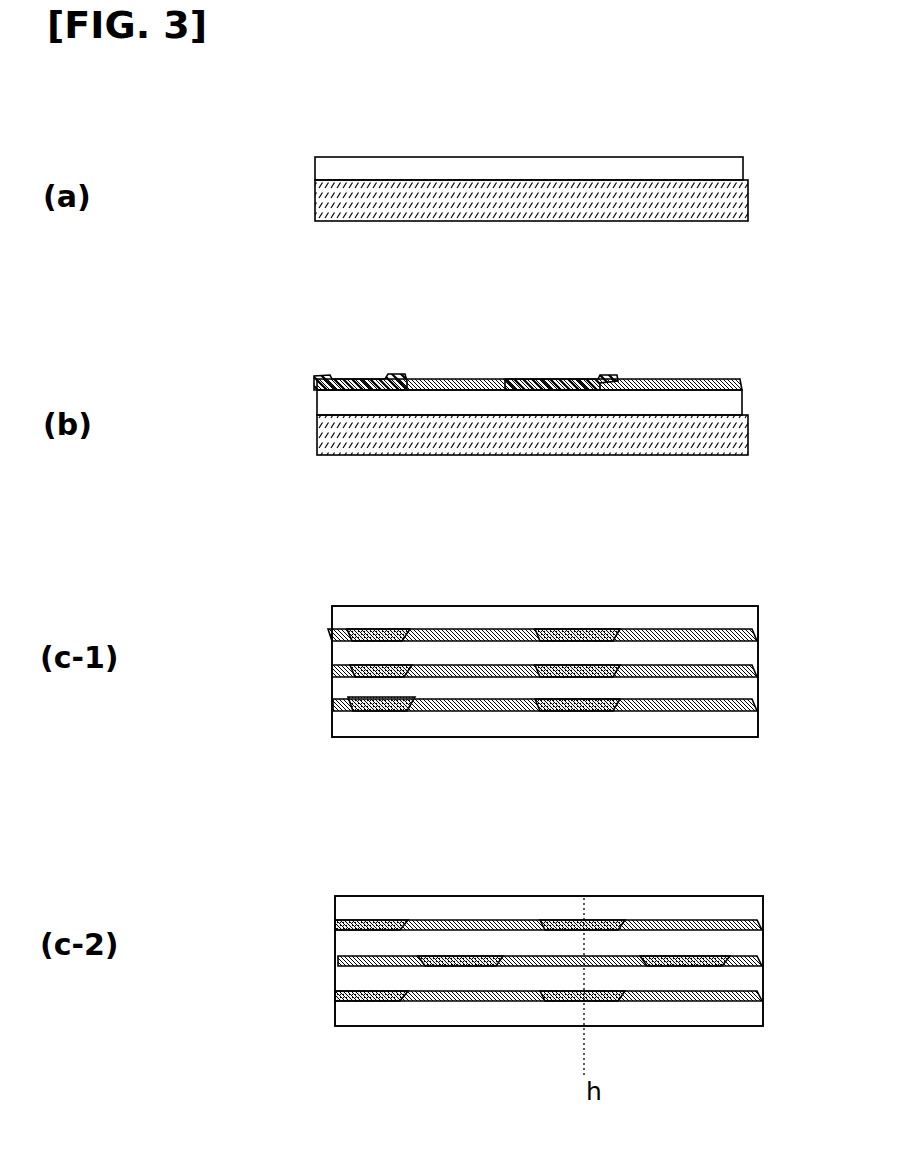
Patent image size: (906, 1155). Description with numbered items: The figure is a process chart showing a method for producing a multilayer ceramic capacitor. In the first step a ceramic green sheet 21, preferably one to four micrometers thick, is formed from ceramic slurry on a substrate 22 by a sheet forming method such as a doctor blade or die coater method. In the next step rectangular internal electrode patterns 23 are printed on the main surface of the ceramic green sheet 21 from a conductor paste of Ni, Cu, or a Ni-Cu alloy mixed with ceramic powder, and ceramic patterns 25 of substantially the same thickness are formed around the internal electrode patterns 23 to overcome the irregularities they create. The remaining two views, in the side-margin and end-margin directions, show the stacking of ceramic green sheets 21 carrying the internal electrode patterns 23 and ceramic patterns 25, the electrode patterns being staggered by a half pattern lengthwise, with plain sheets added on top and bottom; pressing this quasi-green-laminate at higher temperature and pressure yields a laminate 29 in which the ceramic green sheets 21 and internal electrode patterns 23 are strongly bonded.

The ceramic green sheet 21 is at (660, 167).
The substrate 22 is at (668, 203).
The internal electrode pattern 23 is at (447, 380).
The ceramic pattern 25 is at (340, 378).
The laminate 29 is at (713, 600).